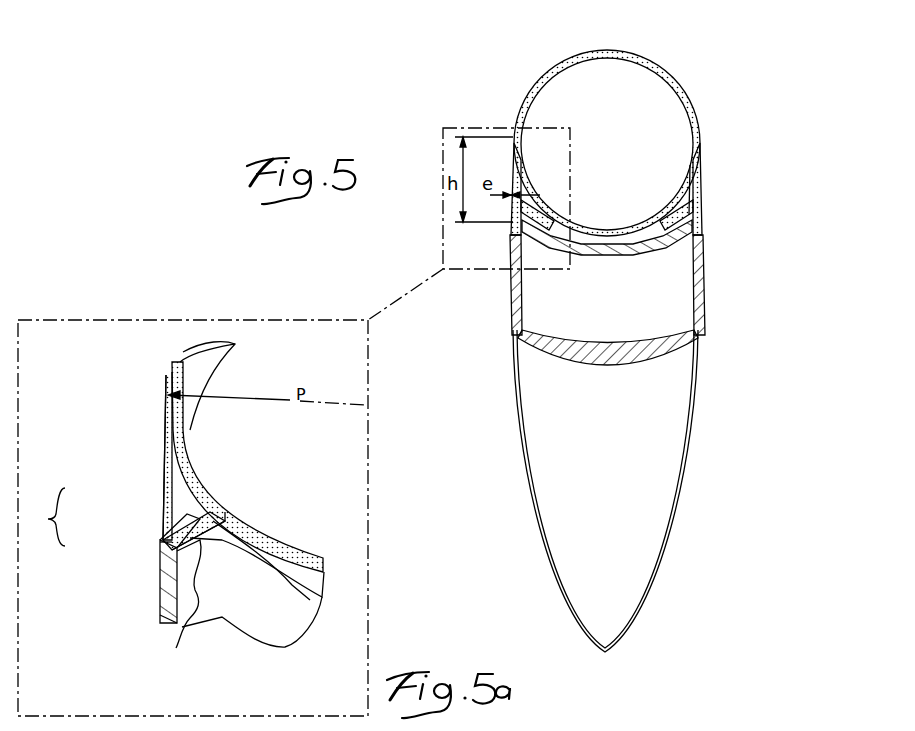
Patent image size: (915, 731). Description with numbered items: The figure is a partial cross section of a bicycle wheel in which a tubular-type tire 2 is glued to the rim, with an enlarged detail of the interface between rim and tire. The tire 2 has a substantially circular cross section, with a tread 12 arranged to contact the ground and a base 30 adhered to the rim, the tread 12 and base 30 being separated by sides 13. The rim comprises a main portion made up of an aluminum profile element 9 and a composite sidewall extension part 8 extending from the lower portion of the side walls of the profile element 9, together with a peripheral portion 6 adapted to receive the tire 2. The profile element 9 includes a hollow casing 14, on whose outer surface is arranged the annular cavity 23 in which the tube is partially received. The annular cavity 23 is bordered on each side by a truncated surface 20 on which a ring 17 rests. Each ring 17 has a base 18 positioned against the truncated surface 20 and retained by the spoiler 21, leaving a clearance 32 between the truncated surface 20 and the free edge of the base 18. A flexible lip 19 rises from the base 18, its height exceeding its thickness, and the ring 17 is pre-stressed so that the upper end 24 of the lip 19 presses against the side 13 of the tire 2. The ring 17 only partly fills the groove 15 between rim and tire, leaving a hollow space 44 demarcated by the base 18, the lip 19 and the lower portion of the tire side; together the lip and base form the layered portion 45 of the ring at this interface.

In FIG. 5, the tire 2 is at (686, 85).
In FIG. 5A, the tire 2 is at (188, 360).
In FIG. 5A, the peripheral portion 6 is at (168, 615).
In FIG. 5, the sidewall extension part 8 is at (705, 322).
In FIG. 5, the profile element 9 is at (705, 270).
In FIG. 5, the tread 12 is at (590, 52).
In FIG. 5, the sides 13 is at (510, 116).
In FIG. 5, the hollow casing 14 is at (597, 322).
In FIG. 5, the groove 15 is at (695, 190).
In FIG. 5, the ring 17 is at (690, 190).
In FIG. 5A, the ring 17 is at (162, 513).
In FIG. 5A, the base 18 is at (163, 542).
In FIG. 5A, the lip 19 is at (164, 472).
In FIG. 5A, the truncated surface 20 is at (190, 625).
In FIG. 5A, the spoiler 21 is at (162, 578).
In FIG. 5, the annular cavity 23 is at (603, 242).
In FIG. 5A, the upper end 24 is at (166, 380).
In FIG. 5, the base of the tire 30 is at (670, 240).
In FIG. 5A, the clearance 32 is at (222, 520).
In FIG. 5A, the hollow space 44 is at (184, 492).
In FIG. 5A, the layered wall 45 is at (41, 517).